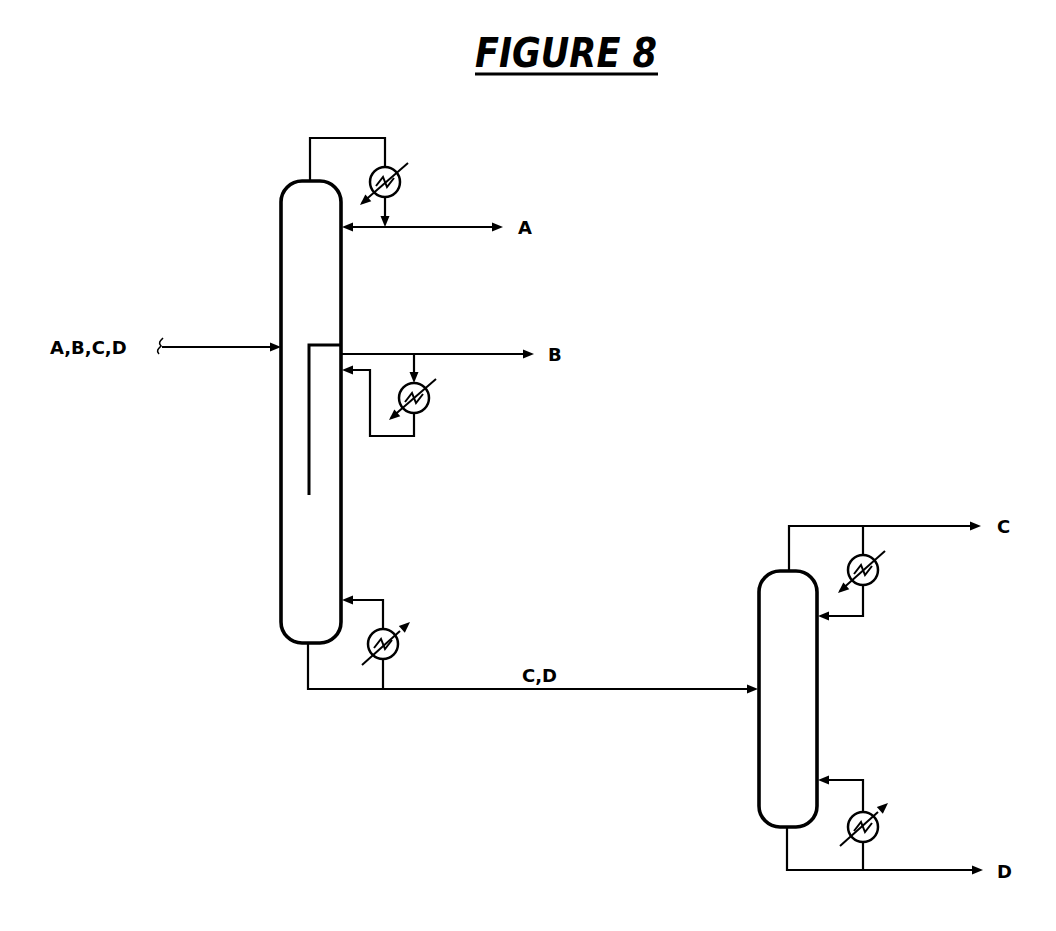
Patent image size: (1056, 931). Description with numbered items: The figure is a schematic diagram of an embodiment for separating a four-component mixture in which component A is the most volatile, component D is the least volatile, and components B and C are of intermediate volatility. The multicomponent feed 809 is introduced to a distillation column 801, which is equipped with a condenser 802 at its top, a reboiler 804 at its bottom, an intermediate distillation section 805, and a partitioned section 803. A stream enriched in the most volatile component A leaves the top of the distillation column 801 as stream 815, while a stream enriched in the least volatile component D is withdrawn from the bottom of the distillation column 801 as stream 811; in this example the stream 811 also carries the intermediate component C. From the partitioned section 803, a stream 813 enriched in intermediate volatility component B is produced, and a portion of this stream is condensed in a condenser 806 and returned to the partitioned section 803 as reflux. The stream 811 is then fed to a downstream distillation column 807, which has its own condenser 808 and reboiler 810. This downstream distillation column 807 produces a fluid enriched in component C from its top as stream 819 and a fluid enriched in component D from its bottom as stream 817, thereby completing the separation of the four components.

The distillation column 801 is at (280, 272).
The condenser 802 is at (398, 192).
The partitioned section 803 is at (325, 460).
The reboiler 804 is at (396, 653).
The intermediate distillation section 805 is at (297, 435).
The condenser 806 is at (428, 409).
The downstream distillation column 807 is at (818, 743).
The condenser 808 is at (877, 580).
The multicomponent feed 809 is at (219, 361).
The reboiler 810 is at (873, 833).
The stream 811 is at (533, 683).
The stream 813 is at (438, 371).
The stream 815 is at (422, 242).
The stream 817 is at (885, 866).
The stream 819 is at (922, 543).